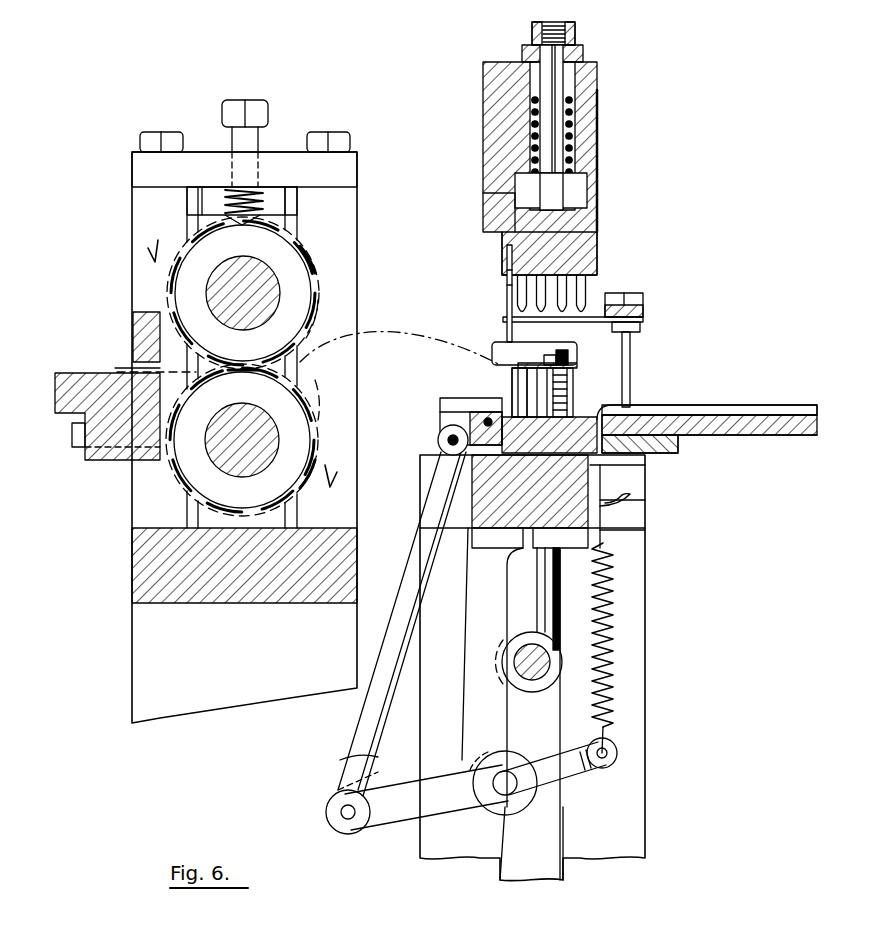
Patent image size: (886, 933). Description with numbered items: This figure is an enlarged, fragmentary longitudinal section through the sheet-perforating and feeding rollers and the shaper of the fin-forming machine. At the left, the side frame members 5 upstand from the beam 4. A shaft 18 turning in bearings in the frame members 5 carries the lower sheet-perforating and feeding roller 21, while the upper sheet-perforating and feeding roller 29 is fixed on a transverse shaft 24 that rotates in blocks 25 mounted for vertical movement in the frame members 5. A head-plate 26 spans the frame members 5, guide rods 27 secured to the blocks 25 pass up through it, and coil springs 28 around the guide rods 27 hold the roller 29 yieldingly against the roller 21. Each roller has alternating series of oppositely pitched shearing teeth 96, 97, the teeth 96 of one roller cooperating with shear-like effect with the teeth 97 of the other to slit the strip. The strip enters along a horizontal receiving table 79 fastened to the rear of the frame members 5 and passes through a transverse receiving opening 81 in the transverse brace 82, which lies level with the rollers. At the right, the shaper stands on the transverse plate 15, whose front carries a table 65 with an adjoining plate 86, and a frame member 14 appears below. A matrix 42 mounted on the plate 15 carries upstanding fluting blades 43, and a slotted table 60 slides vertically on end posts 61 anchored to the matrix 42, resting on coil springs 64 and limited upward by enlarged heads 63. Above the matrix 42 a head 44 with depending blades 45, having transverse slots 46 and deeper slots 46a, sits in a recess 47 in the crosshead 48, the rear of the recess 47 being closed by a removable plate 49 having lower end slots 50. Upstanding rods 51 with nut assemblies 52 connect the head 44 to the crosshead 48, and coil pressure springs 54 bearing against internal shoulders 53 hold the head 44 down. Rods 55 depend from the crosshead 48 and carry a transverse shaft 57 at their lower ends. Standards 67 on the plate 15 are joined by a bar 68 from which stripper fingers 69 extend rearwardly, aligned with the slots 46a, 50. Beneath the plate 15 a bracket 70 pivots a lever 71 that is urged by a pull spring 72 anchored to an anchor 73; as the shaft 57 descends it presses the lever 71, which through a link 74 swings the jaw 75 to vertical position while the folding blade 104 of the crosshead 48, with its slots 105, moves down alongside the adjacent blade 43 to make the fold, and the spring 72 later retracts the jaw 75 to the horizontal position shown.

The beam 4 is at (134, 566).
The side frame members 5 is at (132, 203).
The main frame 14 is at (638, 690).
The transverse plate 15 is at (600, 470).
The shaft 18 is at (268, 438).
The lower sheet-perforating and feeding roller 21 is at (192, 462).
The transverse shaft 24 is at (262, 284).
The blocks 25 is at (292, 222).
The head-plate 26 is at (357, 163).
The guide rods 27 is at (258, 137).
The coil springs 28 is at (240, 205).
The upper sheet-perforating and feeding roller 29 is at (208, 275).
The matrix 42 is at (612, 410).
The fluting blades 43 is at (512, 372).
The head 44 is at (582, 250).
The depending blades 45 is at (586, 280).
The transverse slots 46 is at (586, 290).
The deep slots 46a is at (505, 262).
The recess 47 is at (520, 181).
The crosshead 48 is at (490, 80).
The removable plate 49 is at (599, 152).
The lower end slots 50 is at (482, 207).
The upstanding rods 51 is at (565, 90).
The nut assemblies 52 is at (576, 44).
The internal downwardly facing shoulders 53 is at (532, 92).
The coil pressure springs 54 is at (545, 128).
The rods 55 is at (558, 596).
The transverse shaft 57 is at (545, 655).
The table 60 is at (568, 360).
The end posts 61 is at (572, 408).
The enlarged heads 63 is at (568, 348).
The coil springs 64 is at (520, 388).
The table 65 is at (780, 436).
The standards 67 is at (630, 372).
The bar 68 is at (643, 305).
The stripper fingers 69 is at (498, 318).
The bracket 70 is at (468, 600).
The lever 71 is at (395, 822).
The pull spring 72 is at (614, 620).
The anchor 73 is at (645, 500).
The link 74 is at (405, 598).
The jaw 75 is at (444, 424).
The horizontal receiving table 79 is at (82, 374).
The transverse receiving opening 81 is at (137, 364).
The transverse brace 82 is at (133, 320).
The table plate 86 is at (765, 405).
The shearing teeth 96 is at (312, 285).
The shearing teeth 97 is at (320, 320).
The folding blade 104 is at (507, 272).
The slots 105 is at (510, 286).